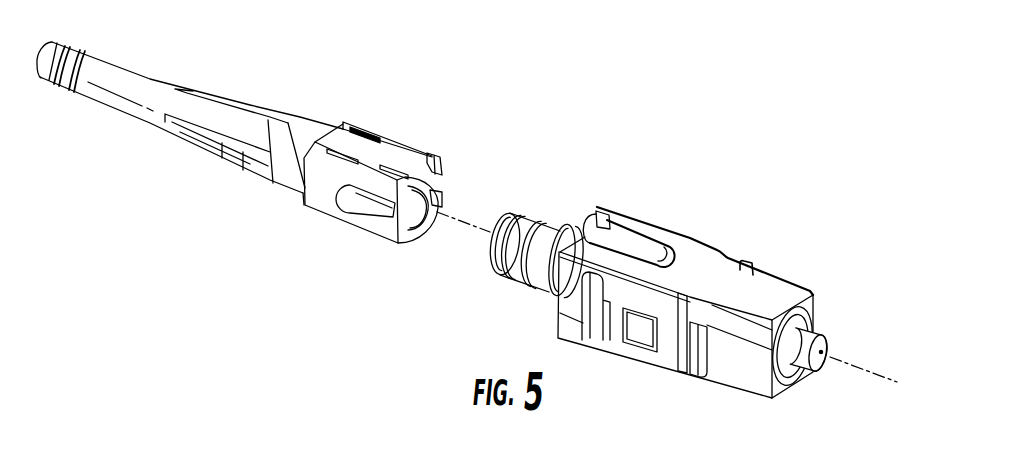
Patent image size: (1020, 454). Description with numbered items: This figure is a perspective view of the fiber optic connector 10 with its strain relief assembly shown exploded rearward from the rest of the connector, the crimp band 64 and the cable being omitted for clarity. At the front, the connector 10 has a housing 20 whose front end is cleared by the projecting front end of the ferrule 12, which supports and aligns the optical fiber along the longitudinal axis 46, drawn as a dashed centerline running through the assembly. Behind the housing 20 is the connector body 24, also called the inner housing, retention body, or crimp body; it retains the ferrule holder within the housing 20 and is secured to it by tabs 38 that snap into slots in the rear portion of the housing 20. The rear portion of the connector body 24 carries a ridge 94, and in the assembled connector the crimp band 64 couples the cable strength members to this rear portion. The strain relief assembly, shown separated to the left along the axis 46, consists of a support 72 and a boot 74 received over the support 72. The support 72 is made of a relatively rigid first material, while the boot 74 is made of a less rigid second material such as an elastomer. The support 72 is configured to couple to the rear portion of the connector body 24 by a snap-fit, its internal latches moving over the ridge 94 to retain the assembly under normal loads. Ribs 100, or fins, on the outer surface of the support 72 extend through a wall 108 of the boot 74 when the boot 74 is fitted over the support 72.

The connector 10 is at (310, 68).
The ferrule 12 is at (819, 327).
The housing 20 is at (705, 237).
The connector body 24 is at (507, 277).
The tabs 38 is at (634, 227).
The longitudinal axis 46 is at (857, 369).
The crimp band 64 is at (535, 207).
The support 72 is at (372, 134).
The boot 74 is at (250, 102).
The ridge 94 is at (569, 222).
The rib 100 is at (421, 152).
The wall 108 is at (445, 163).